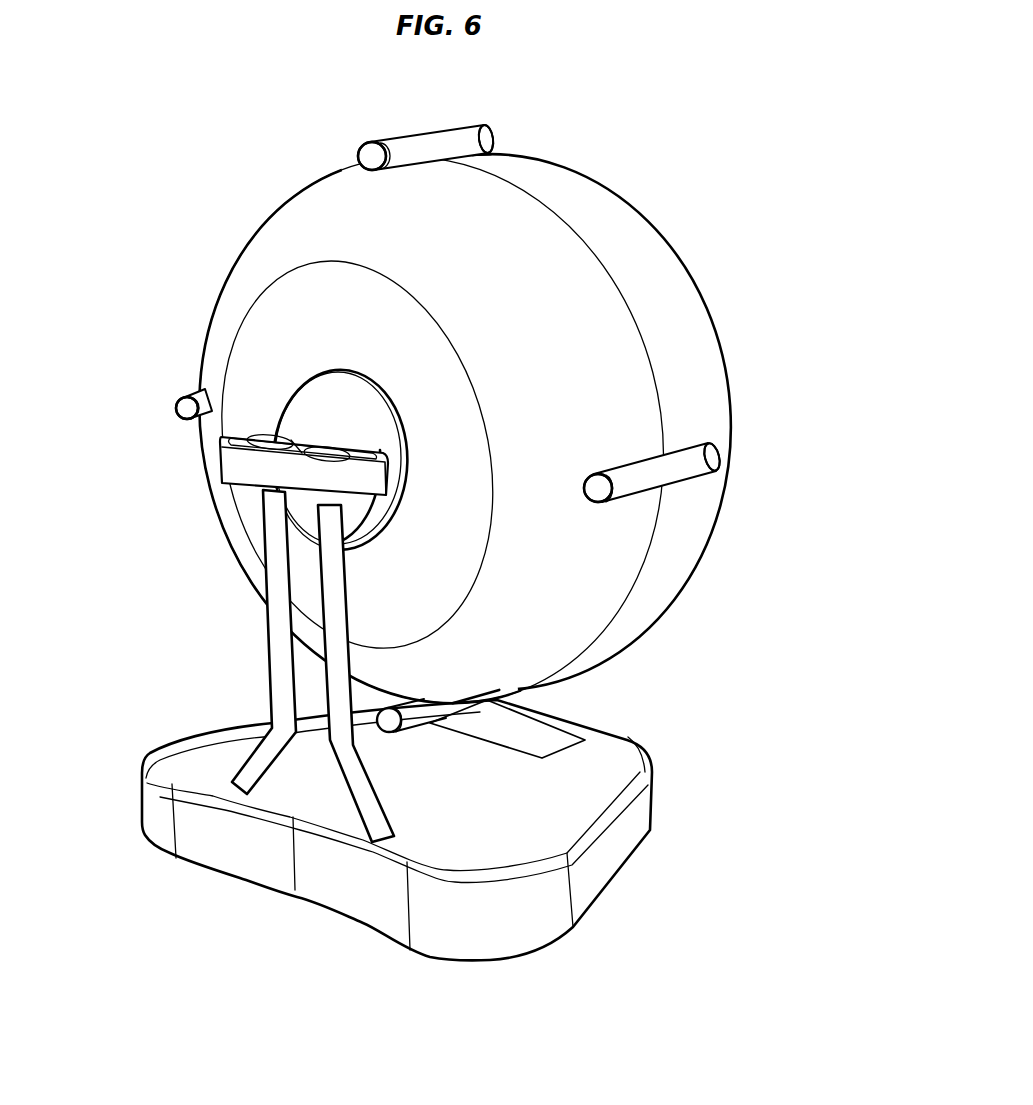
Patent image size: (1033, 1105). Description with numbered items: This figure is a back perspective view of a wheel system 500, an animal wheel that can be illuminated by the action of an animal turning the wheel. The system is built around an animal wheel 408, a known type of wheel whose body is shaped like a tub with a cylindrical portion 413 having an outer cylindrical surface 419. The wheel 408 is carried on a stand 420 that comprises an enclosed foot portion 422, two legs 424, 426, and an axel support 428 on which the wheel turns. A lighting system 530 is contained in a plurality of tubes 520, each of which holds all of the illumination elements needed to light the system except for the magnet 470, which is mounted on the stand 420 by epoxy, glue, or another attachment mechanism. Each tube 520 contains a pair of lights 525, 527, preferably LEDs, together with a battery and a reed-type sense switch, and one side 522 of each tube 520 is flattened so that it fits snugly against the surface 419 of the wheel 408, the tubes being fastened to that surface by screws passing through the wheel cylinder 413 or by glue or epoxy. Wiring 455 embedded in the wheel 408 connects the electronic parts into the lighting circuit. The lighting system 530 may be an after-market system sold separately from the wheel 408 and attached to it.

The wheel system 500 is at (136, 284).
The animal wheel 408 is at (693, 577).
The cylindrical portion 413 is at (677, 280).
The outer cylindrical surface 419 is at (623, 227).
The wiring 455 is at (268, 243).
The axel support 428 is at (227, 472).
The leg 424 is at (277, 685).
The leg 426 is at (360, 773).
The stand 420 is at (420, 830).
The enclosed foot portion 422 is at (237, 863).
The magnet 470 is at (525, 740).
The tube 520 is at (443, 127).
The flattened side 522 is at (677, 443).
The light 525 is at (499, 142).
The light 527 is at (359, 153).
The lighting system 530 is at (766, 504).